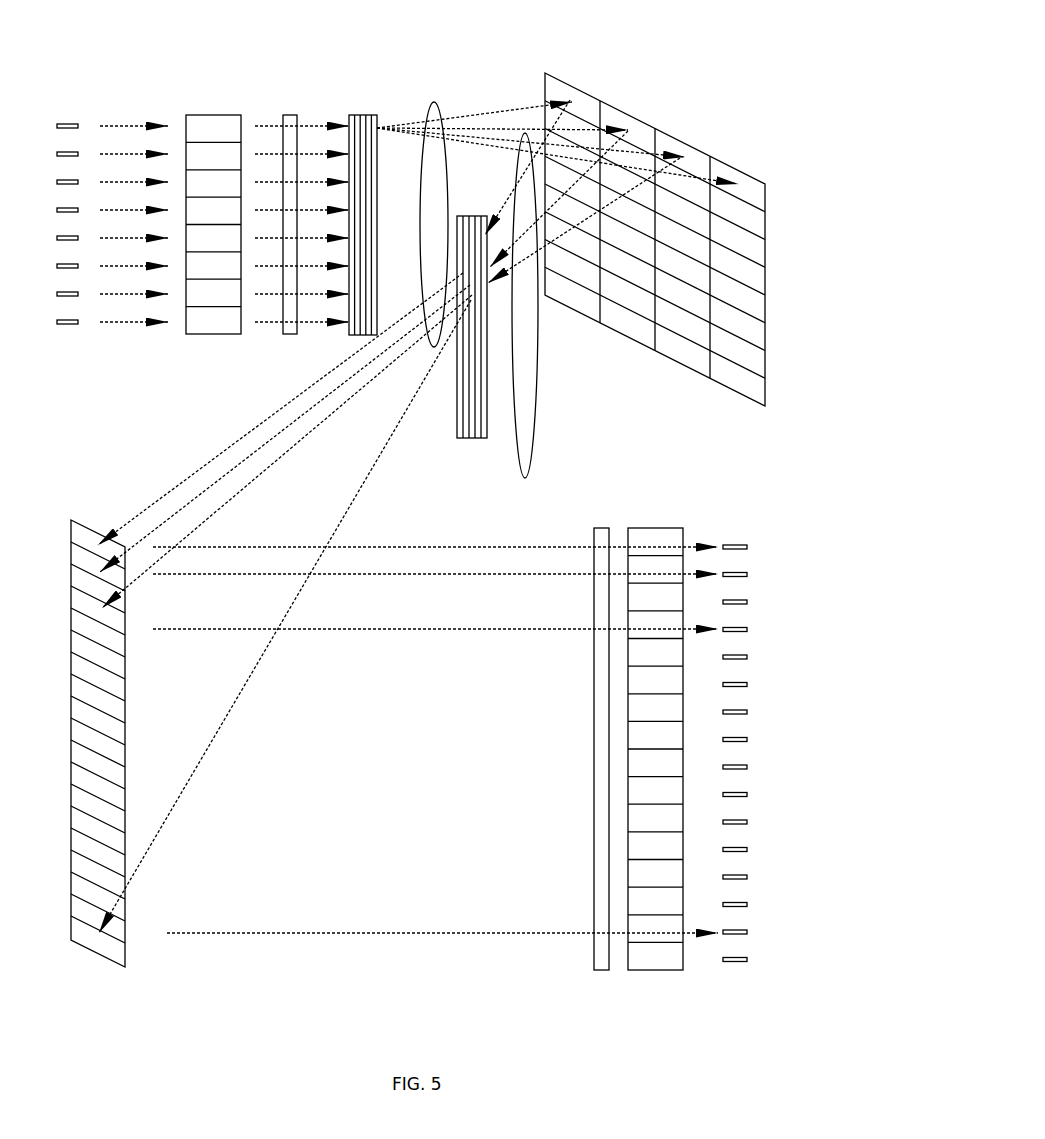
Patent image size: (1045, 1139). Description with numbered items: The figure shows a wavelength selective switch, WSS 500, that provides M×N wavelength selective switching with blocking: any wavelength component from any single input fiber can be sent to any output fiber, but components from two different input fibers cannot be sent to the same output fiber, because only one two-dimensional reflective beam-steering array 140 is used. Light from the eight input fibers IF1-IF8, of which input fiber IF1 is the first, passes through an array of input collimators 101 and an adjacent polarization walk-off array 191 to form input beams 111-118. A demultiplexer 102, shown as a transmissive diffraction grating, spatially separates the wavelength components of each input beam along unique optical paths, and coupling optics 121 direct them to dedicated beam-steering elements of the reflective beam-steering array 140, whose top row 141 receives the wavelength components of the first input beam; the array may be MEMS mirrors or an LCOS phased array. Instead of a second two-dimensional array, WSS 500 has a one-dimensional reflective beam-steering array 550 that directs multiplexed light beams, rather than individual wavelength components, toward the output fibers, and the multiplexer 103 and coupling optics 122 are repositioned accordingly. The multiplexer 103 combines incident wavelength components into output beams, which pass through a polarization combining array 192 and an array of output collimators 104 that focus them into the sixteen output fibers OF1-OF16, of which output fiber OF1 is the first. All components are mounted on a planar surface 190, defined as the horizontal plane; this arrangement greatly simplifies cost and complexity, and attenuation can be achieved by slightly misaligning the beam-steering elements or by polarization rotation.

The input fiber IF1 is at (63, 125).
The input fibers IF1-IF8 is at (68, 343).
The input beams 111-118 is at (138, 113).
The array of input collimators 101 is at (217, 115).
The polarization walk-off array 191 is at (293, 115).
The demultiplexer 102 is at (365, 113).
The coupling optics 121 is at (437, 102).
The WSS 500 is at (687, 75).
The first reflective beam-steering array 140 is at (738, 167).
The top row 141 is at (773, 202).
The coupling optics 122 is at (537, 422).
The multiplexer 103 is at (477, 438).
The one-dimensional reflective beam-steering array 550 is at (92, 530).
The polarization combining array 192 is at (605, 528).
The array of output collimators 104 is at (662, 528).
The output fiber OF1 is at (738, 542).
The output fibers OF1-OF16 is at (738, 975).
The planar surface 190 is at (405, 1016).